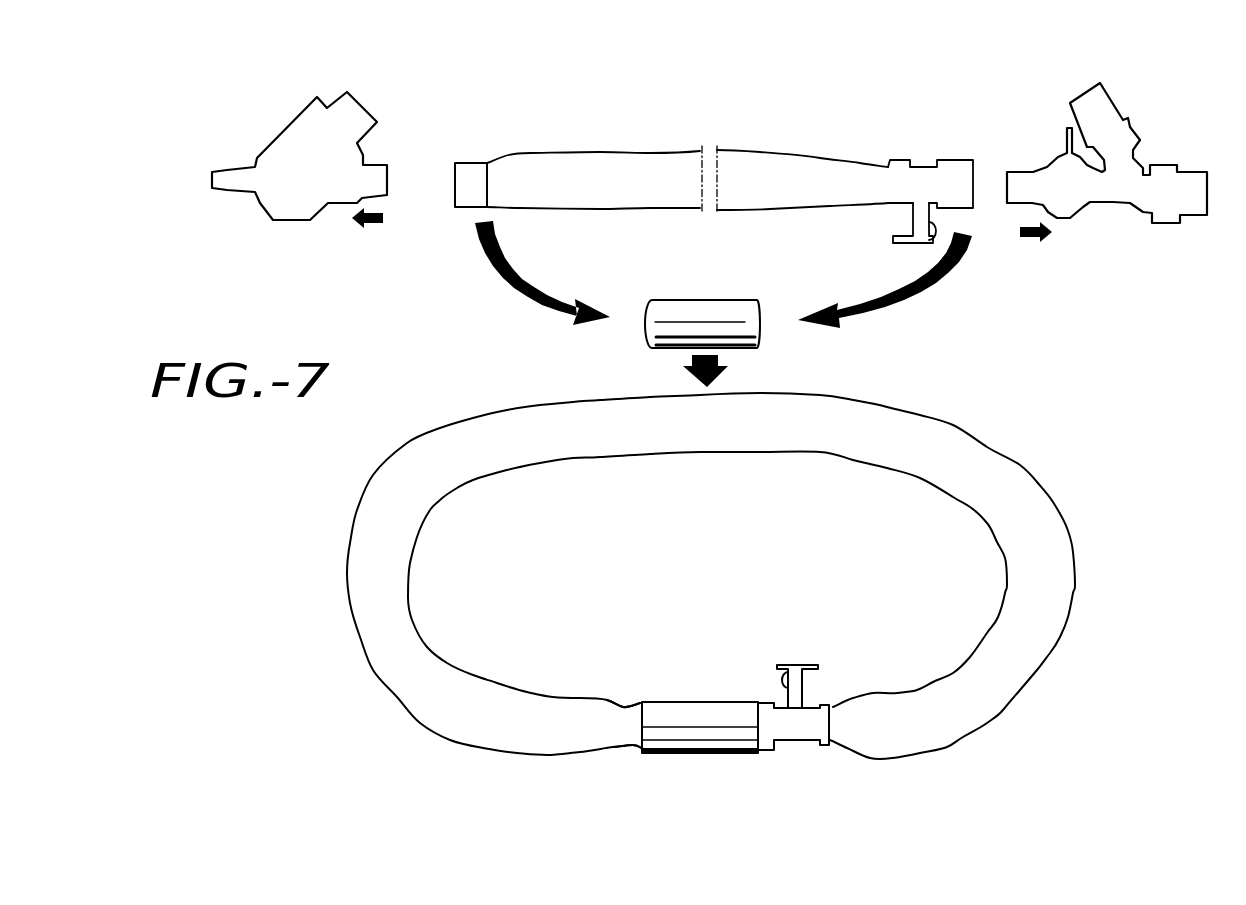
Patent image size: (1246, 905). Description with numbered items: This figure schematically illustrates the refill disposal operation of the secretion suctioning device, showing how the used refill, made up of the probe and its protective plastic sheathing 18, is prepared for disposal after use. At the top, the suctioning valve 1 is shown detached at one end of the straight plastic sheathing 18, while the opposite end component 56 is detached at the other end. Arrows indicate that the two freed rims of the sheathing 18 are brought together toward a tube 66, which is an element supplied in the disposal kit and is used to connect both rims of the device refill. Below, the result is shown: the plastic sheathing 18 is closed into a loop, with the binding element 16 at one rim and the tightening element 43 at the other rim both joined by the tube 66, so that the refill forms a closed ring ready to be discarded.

The suctioning valve 1 is at (268, 110).
The plastic sheathing 18 is at (805, 152).
The second connector body 56 is at (1176, 113).
The tube 66 is at (702, 312).
The binding element 16 is at (632, 700).
The tightening element 43 is at (773, 693).